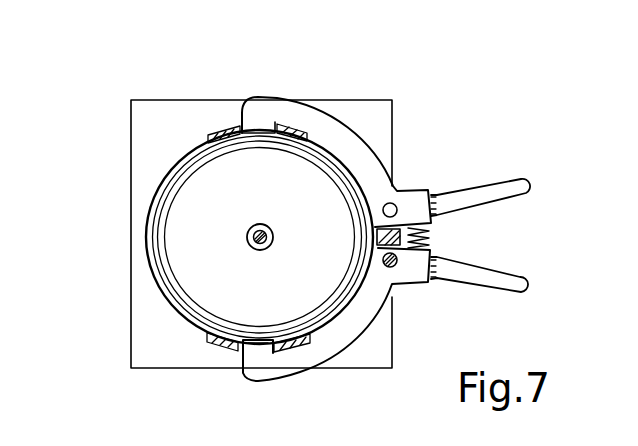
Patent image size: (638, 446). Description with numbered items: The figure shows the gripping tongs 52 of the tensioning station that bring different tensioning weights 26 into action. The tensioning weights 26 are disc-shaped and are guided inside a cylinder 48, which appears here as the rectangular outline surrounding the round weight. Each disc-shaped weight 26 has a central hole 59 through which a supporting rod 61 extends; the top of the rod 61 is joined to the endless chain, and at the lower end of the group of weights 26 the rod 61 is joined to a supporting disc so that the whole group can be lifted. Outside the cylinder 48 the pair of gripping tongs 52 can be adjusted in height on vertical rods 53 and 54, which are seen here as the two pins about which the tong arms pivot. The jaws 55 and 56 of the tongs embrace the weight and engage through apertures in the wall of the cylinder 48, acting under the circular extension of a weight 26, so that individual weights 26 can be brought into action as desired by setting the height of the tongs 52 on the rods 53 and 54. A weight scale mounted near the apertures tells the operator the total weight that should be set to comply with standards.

The tensioning weights 26 is at (192, 195).
The cylinder 48 is at (147, 260).
The gripping tongs 52 is at (487, 193).
The vertical rod 53 is at (395, 207).
The vertical rod 54 is at (395, 267).
The jaw 55 is at (263, 99).
The jaw 56 is at (265, 368).
The central hole 59 is at (272, 238).
The supporting rod 61 is at (258, 229).